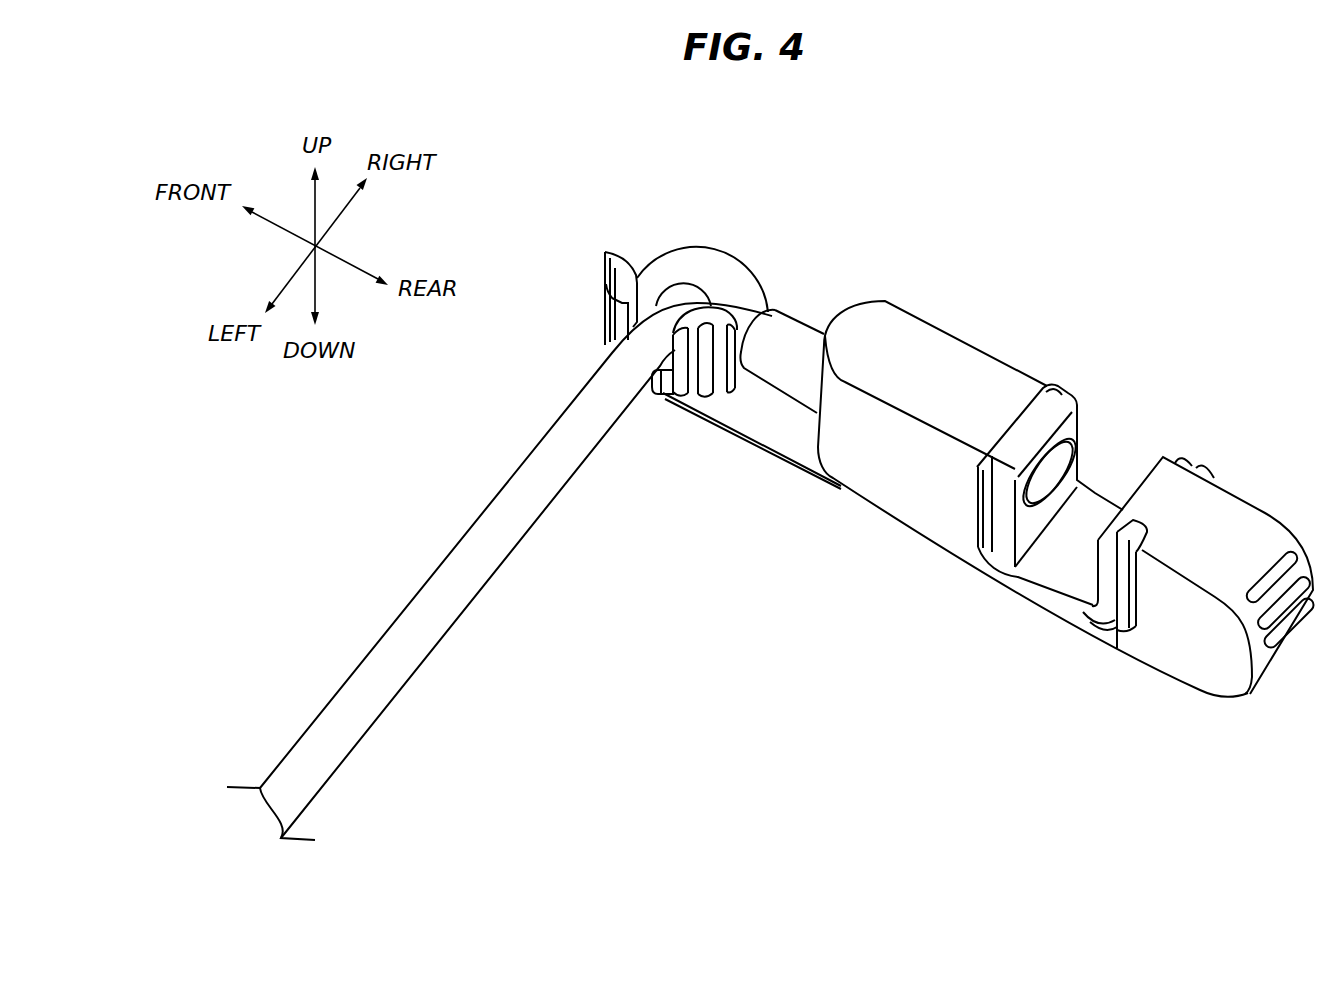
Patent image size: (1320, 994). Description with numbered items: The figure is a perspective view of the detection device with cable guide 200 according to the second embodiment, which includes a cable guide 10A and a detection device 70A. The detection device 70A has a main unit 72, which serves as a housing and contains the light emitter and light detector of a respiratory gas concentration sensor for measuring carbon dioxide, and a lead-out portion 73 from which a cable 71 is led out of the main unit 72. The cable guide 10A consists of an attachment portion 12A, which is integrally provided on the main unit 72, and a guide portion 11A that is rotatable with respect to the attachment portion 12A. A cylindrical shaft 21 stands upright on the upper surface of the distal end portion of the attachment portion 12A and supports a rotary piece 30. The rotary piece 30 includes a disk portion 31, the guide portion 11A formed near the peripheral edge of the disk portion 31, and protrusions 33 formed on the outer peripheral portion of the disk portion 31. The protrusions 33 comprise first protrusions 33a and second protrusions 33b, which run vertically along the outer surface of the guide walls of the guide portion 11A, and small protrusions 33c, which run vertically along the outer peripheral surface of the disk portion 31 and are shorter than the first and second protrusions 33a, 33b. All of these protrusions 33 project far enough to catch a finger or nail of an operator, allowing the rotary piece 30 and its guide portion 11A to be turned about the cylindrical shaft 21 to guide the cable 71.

The cable guide 10A is at (797, 178).
The detection device with cable guide 200 is at (1103, 230).
The rotary piece 30 is at (731, 230).
The disk portion 31 is at (748, 290).
The cylindrical shaft 21 is at (683, 297).
The guide portion 11A is at (645, 273).
The protrusions 33 is at (620, 379).
The first protrusions 33a is at (682, 395).
The second protrusions 33b is at (604, 308).
The small protrusions 33c is at (656, 397).
The attachment portion 12A is at (787, 430).
The lead-out portion 73 is at (793, 328).
The main unit 72 is at (955, 370).
The detection device 70A is at (1259, 478).
The cable 71 is at (382, 657).